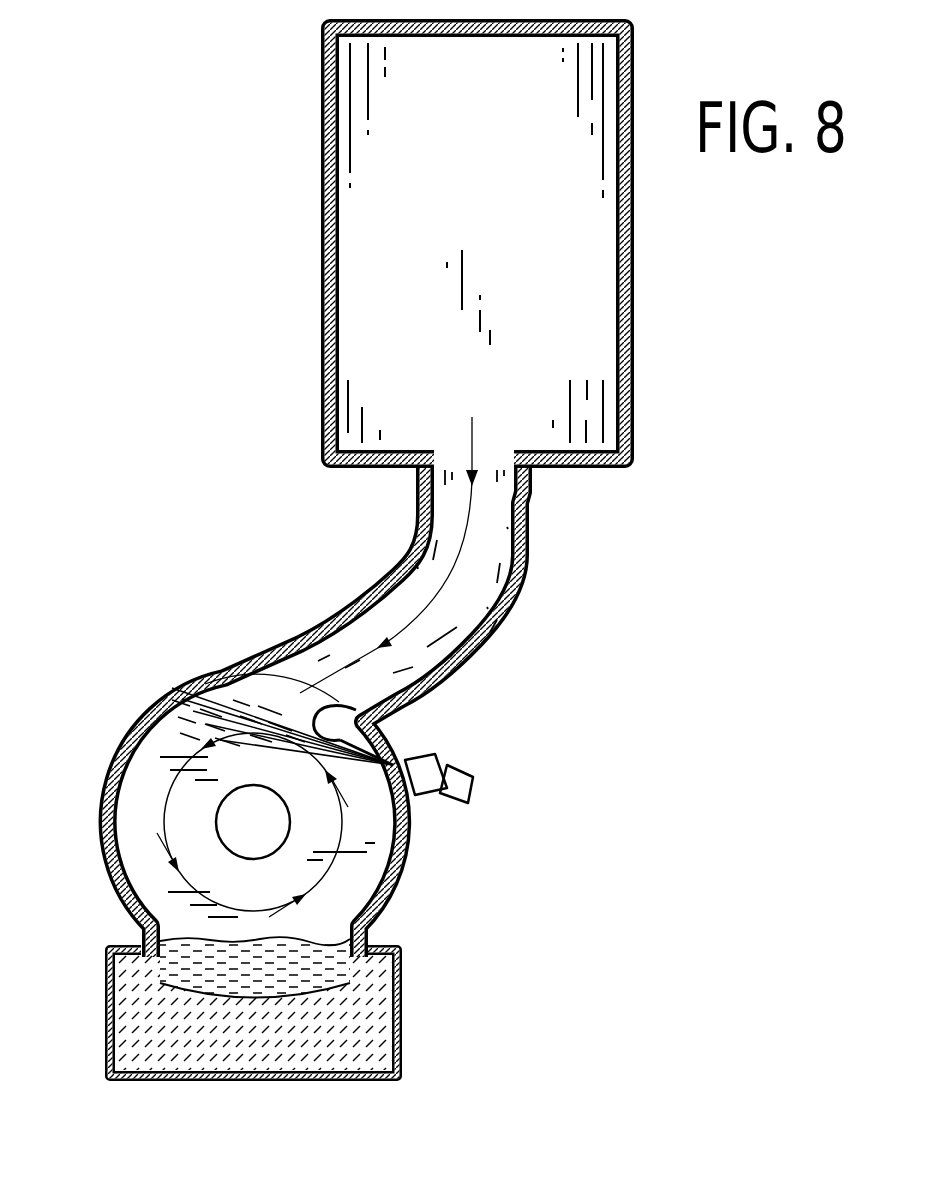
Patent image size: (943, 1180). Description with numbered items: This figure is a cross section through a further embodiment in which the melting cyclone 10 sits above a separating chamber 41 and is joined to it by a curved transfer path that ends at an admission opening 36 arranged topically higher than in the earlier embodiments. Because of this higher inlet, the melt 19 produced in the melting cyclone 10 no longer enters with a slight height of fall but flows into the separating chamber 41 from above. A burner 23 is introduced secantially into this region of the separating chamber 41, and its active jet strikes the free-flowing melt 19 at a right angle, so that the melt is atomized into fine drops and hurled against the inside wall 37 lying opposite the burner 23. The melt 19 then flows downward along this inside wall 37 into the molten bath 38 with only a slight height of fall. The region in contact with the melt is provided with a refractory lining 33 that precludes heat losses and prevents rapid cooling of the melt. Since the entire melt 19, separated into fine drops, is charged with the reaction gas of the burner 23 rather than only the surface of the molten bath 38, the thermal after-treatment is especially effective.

The melting cyclone 10 is at (490, 207).
The admission opening 36 is at (245, 672).
The inside wall 37 is at (110, 773).
The melt 19 is at (143, 930).
The burner 23 is at (443, 752).
The separating chamber 41 is at (332, 833).
The molten bath 38 is at (320, 953).
The refractory lining 33 is at (367, 1017).